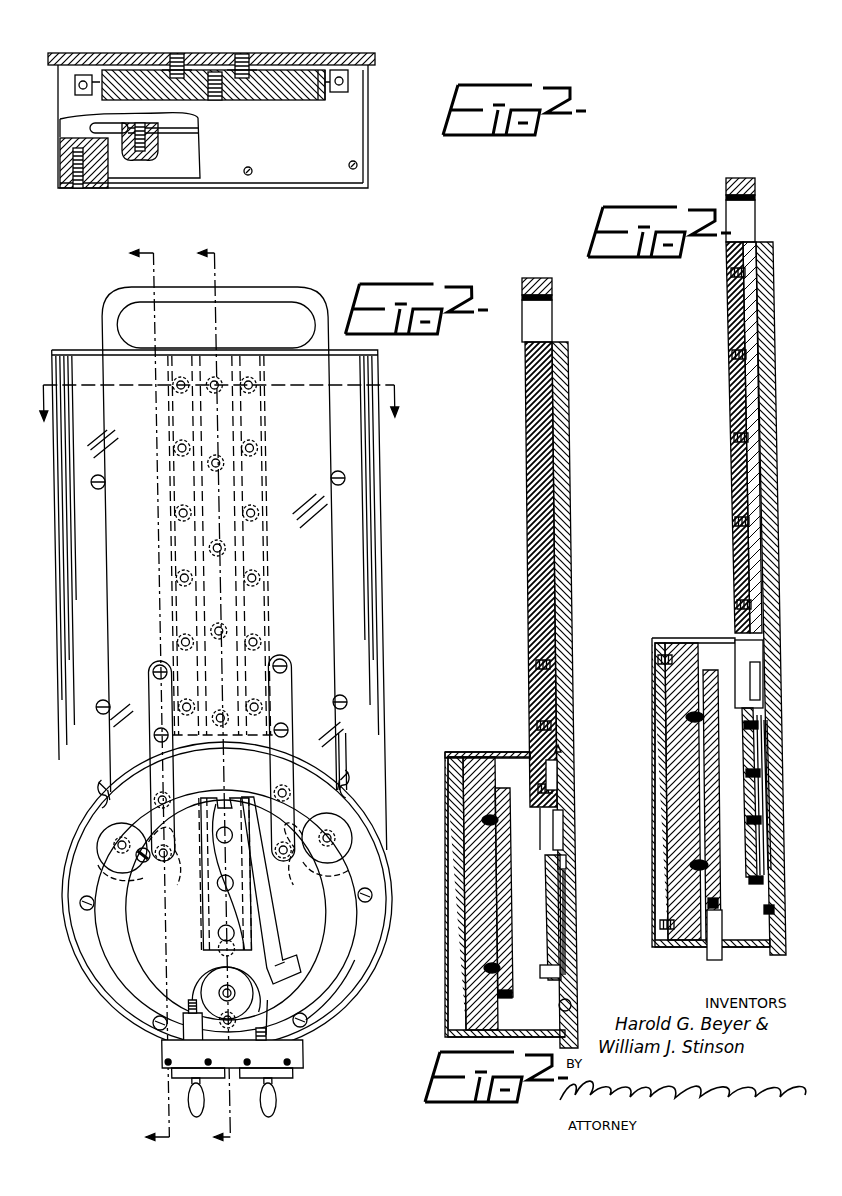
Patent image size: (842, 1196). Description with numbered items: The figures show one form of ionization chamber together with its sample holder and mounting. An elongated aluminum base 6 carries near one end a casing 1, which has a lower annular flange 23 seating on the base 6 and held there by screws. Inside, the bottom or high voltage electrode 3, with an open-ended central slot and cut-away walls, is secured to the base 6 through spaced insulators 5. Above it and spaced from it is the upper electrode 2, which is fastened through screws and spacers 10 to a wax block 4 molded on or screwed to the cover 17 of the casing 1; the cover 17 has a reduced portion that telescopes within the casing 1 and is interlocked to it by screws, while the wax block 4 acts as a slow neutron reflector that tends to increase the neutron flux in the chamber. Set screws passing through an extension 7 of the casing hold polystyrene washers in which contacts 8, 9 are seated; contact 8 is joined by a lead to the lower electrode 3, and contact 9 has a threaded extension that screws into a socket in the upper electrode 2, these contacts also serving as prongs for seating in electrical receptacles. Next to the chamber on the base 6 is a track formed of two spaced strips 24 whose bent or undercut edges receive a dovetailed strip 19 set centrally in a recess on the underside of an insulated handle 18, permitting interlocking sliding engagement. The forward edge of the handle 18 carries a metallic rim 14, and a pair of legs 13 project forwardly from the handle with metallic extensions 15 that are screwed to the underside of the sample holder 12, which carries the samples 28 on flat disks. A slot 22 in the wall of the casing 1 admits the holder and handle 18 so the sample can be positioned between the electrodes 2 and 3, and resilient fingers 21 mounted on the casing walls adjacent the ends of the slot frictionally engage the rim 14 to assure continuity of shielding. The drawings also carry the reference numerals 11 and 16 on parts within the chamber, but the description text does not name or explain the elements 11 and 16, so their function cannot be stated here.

In FIG. 2, the casing 1 is at (368, 132).
In FIG. 1, the casing 1 is at (369, 855).
In FIG. 3, the casing 1 is at (486, 752).
In FIG. 4, the casing 1 is at (710, 638).
In FIG. 2, the upper electrode 2 is at (60, 126).
In FIG. 1, the upper electrode 2 is at (218, 415).
In FIG. 3, the upper electrode 2 is at (505, 997).
In FIG. 4, the upper electrode 2 is at (716, 906).
In FIG. 1, the lower electrode 3 is at (152, 927).
In FIG. 3, the lower electrode 3 is at (557, 927).
In FIG. 4, the lower electrode 3 is at (752, 853).
In FIG. 2, the wax block 4 is at (62, 162).
In FIG. 1, the wax block 4 is at (201, 698).
In FIG. 3, the wax block 4 is at (470, 992).
In FIG. 4, the wax block 4 is at (680, 865).
In FIG. 1, the insulators 5 is at (329, 848).
In FIG. 3, the insulators 5 is at (563, 838).
In FIG. 4, the insulators 5 is at (772, 735).
In FIG. 2, the base 6 is at (280, 52).
In FIG. 1, the base 6 is at (388, 574).
In FIG. 3, the base 6 is at (575, 527).
In FIG. 4, the base 6 is at (777, 477).
In FIG. 1, the extension 7 is at (214, 1070).
In FIG. 1, the contact 8 is at (269, 1098).
In FIG. 1, the contact 9 is at (181, 1101).
In FIG. 4, the contact 9 is at (712, 958).
In FIG. 2, the spacers 10 is at (152, 140).
In FIG. 3, the spacers 10 is at (505, 800).
In FIG. 4, the spacers 10 is at (710, 700).
In FIG. 1, the ring 11 is at (318, 940).
In FIG. 3, the ring 11 is at (540, 972).
In FIG. 1, the sample holder 12 is at (289, 978).
In FIG. 3, the sample holder 12 is at (548, 895).
In FIG. 4, the sample holder 12 is at (760, 800).
In FIG. 1, the legs 13 is at (158, 662).
In FIG. 4, the legs 13 is at (750, 657).
In FIG. 2, the metallic rim 14 is at (325, 100).
In FIG. 1, the metallic rim 14 is at (340, 738).
In FIG. 3, the metallic rim 14 is at (560, 766).
In FIG. 1, the metallic extensions 15 is at (223, 864).
In FIG. 4, the metallic extensions 15 is at (756, 688).
In FIG. 1, the pin 16 is at (208, 938).
In FIG. 4, the pin 16 is at (766, 832).
In FIG. 2, the cover 17 is at (330, 186).
In FIG. 3, the cover 17 is at (446, 779).
In FIG. 4, the cover 17 is at (653, 684).
In FIG. 2, the insulated handle 18 is at (290, 100).
In FIG. 1, the insulated handle 18 is at (114, 336).
In FIG. 3, the insulated handle 18 is at (525, 434).
In FIG. 4, the insulated handle 18 is at (727, 323).
In FIG. 2, the dovetailed strip 19 is at (241, 54).
In FIG. 4, the dovetailed strip 19 is at (752, 303).
In FIG. 2, the resilient fingers 21 is at (349, 80).
In FIG. 1, the resilient fingers 21 is at (99, 792).
In FIG. 2, the slot 22 is at (232, 101).
In FIG. 3, the slot 22 is at (528, 755).
In FIG. 1, the annular flange 23 is at (330, 985).
In FIG. 3, the annular flange 23 is at (571, 1003).
In FIG. 2, the spaced strips 24 is at (177, 54).
In FIG. 1, the samples 28 is at (278, 936).
In FIG. 3, the samples 28 is at (540, 882).